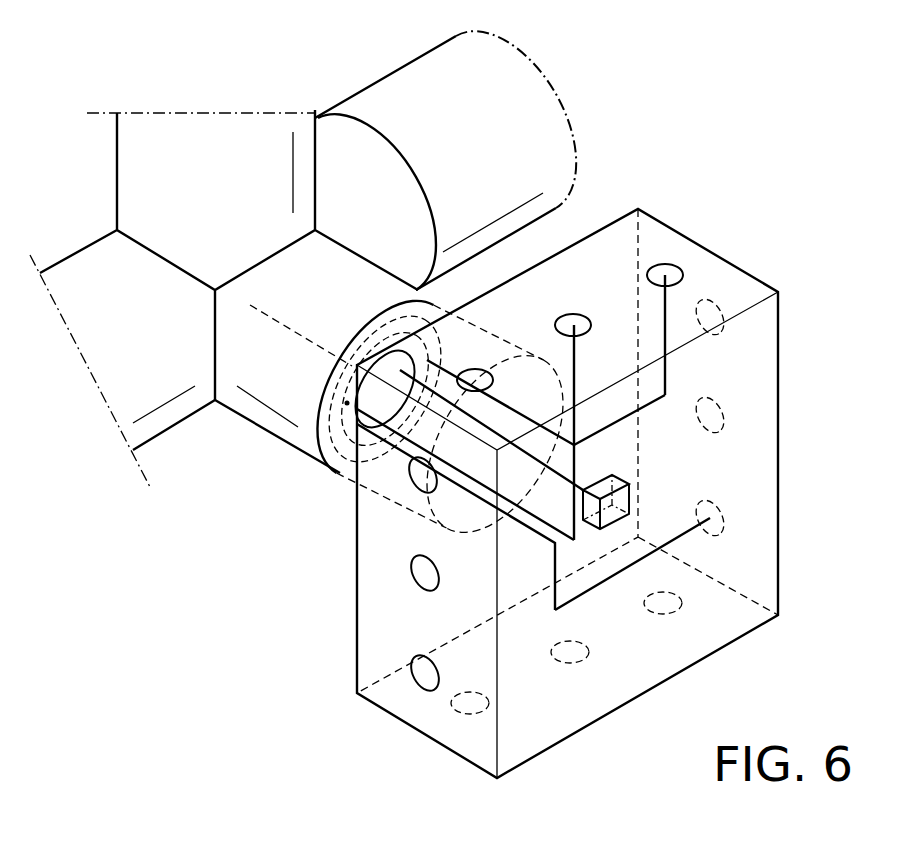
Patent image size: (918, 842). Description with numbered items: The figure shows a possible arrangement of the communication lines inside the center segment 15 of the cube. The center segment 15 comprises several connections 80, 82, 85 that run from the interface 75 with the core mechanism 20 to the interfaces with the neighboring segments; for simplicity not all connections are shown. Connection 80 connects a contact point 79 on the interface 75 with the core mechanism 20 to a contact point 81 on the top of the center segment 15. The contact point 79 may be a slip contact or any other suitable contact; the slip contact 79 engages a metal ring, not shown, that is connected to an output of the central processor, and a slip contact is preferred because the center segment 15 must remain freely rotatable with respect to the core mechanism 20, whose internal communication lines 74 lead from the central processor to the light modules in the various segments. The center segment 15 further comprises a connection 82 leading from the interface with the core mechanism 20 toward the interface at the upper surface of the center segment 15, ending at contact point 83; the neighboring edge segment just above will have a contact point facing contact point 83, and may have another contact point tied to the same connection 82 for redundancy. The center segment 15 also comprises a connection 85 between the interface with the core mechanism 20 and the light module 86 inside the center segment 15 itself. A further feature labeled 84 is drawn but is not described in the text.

The center segment 15 is at (657, 650).
The core mechanism 20 is at (253, 388).
The communication lines 74 is at (262, 312).
The interface 75 is at (412, 285).
The contact point 79 is at (325, 443).
The connection 80 is at (487, 470).
The contact point 81 is at (577, 314).
The connection 82 is at (665, 373).
The contact point 83 is at (670, 268).
The side bore 84 is at (718, 305).
The connection 85 is at (600, 483).
The light module 86 is at (630, 502).